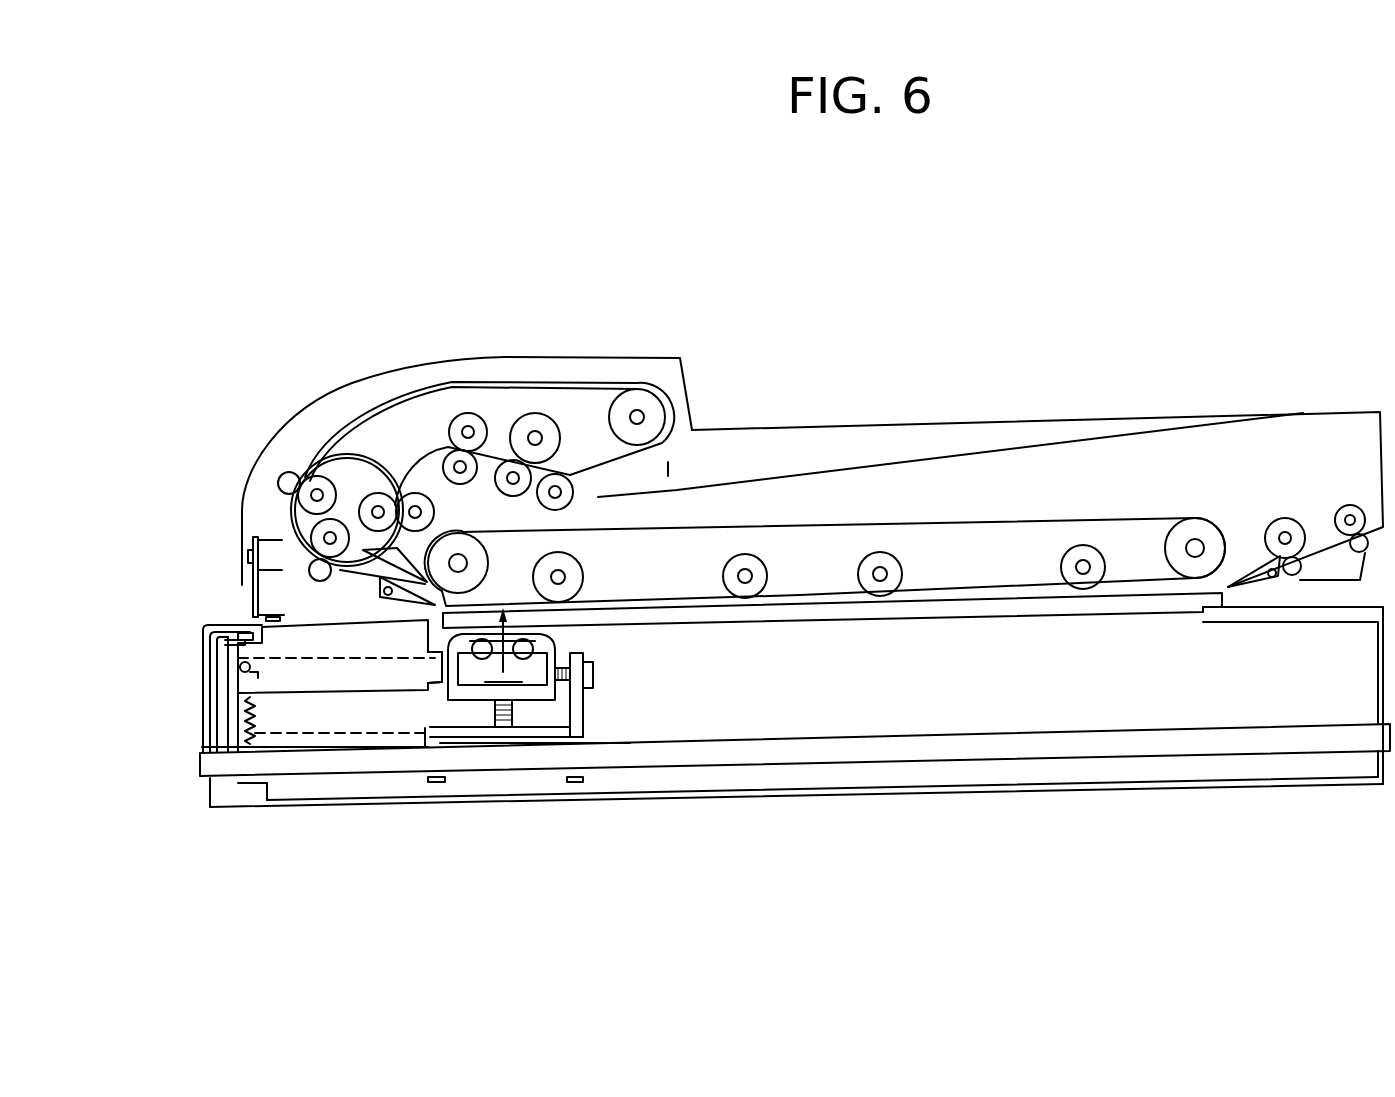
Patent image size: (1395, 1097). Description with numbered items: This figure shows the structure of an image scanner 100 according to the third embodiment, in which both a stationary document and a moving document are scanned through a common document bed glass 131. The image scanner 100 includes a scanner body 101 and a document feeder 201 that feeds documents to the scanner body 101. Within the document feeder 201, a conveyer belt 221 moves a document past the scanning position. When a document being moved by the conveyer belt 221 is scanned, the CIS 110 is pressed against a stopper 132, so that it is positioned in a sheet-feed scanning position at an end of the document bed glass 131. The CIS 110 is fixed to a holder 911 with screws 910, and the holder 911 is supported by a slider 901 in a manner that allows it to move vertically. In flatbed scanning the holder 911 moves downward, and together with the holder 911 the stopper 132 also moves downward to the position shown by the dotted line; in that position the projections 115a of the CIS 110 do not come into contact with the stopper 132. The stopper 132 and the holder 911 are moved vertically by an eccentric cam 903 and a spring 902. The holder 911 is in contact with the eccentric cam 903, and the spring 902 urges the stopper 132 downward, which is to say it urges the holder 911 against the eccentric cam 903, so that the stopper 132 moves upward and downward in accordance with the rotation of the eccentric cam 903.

The image scanner 100 is at (1330, 388).
The scanner body 101 is at (205, 703).
The CIS 110 is at (604, 698).
The projections 115a is at (435, 688).
The document bed glass 131 is at (980, 617).
The stopper 132 is at (298, 673).
The document feeder 201 is at (553, 345).
The conveyer belt 221 is at (825, 600).
The slider 901 is at (242, 785).
The spring 902 is at (212, 718).
The eccentric cam 903 is at (222, 748).
The screws 910 is at (250, 632).
The holder 911 is at (243, 640).